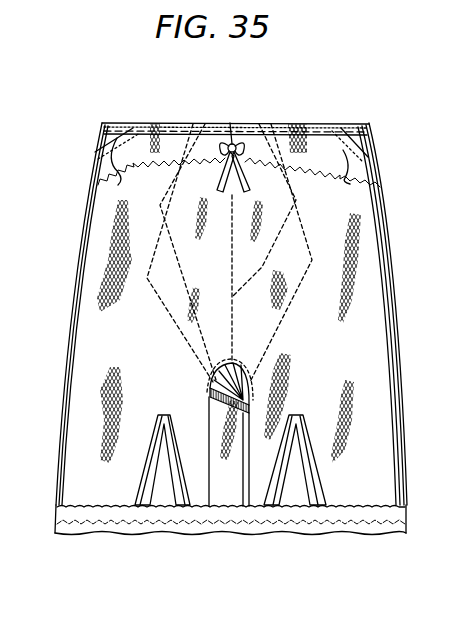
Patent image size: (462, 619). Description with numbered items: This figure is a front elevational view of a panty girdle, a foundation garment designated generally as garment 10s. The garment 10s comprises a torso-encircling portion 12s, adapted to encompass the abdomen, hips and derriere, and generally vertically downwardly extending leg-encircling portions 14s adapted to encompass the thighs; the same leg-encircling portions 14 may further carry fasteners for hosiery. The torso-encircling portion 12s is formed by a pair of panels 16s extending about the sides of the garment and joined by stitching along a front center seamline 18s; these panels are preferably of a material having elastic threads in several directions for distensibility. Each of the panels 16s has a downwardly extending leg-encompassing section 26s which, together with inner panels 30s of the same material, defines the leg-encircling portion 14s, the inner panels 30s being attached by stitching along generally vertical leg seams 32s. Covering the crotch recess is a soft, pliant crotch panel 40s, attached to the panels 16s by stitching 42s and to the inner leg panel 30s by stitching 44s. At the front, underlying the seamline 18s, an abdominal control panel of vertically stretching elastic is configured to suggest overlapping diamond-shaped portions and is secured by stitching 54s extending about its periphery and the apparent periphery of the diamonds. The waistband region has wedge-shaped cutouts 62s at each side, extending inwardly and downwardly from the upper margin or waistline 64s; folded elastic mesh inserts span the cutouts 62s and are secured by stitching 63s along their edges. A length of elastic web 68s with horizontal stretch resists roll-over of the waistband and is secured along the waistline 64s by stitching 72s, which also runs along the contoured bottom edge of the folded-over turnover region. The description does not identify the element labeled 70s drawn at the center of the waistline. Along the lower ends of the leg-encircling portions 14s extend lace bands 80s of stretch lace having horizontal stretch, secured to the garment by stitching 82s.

The panty girdle 10s is at (388, 108).
The torso-encircling portion 12s is at (408, 286).
The leg-encircling portions 14s is at (416, 456).
The leg-encircling portions 14 is at (452, 483).
The panels 16s is at (180, 393).
The front center seamline 18s is at (232, 344).
The leg-encompassing section 26s is at (116, 490).
The inner panels 30s is at (230, 497).
The leg seams 32s is at (200, 508).
The crotch panel 40s is at (213, 387).
The stitching 42s is at (238, 367).
The stitching 44s is at (226, 408).
The stitching 54s is at (311, 262).
The wedge-shaped cutouts 62s is at (128, 125).
The stitching 63s is at (239, 170).
The upper margin or waistline 64s is at (190, 110).
The elastic web 68s is at (269, 123).
The bow 70s is at (244, 123).
The stitching 72s is at (365, 190).
The lace webs or bands 80s is at (348, 533).
The stitching 82s is at (404, 522).